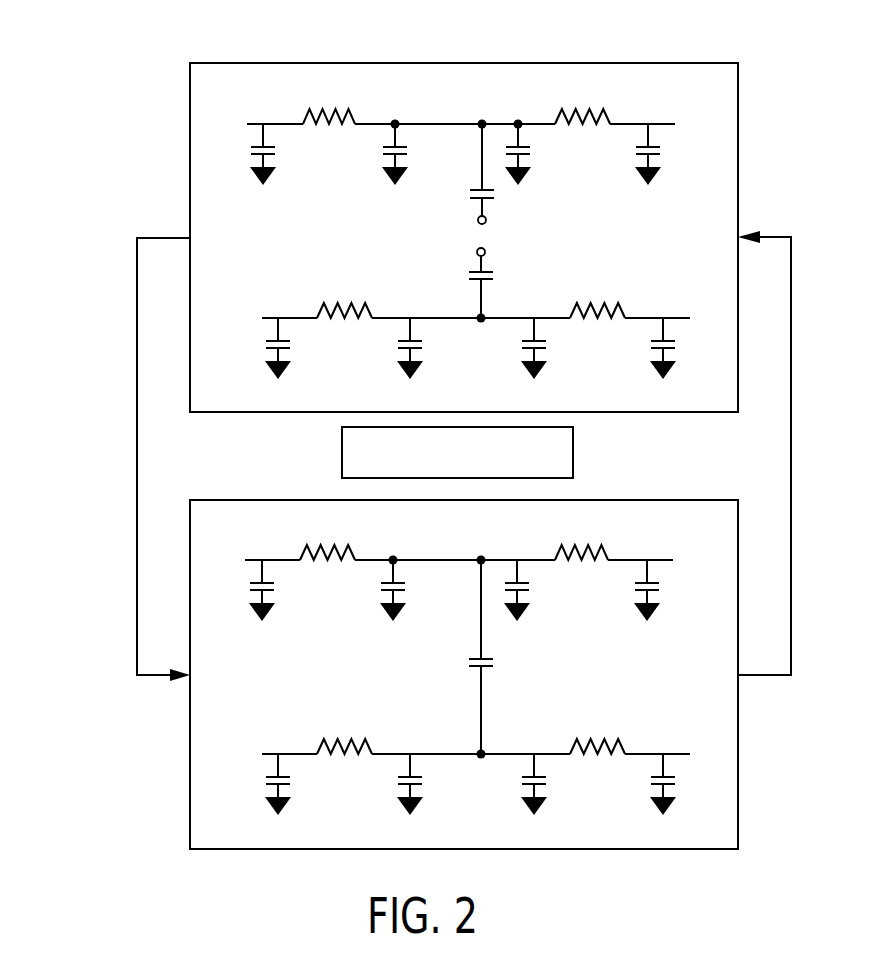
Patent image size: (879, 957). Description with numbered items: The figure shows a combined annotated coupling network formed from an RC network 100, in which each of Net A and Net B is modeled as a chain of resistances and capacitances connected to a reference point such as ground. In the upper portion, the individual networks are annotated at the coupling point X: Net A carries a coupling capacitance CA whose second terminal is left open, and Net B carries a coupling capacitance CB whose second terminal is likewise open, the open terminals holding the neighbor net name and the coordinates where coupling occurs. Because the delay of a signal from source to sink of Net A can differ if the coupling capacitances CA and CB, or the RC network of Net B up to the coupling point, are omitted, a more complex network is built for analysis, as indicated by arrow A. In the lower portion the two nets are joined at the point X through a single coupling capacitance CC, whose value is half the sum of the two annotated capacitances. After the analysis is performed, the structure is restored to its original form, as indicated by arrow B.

The RC network 100 is at (80, 104).
The arrow A is at (153, 459).
The arrow B is at (775, 453).
The coupling point X is at (482, 326).
The coupling capacitance CA is at (501, 174).
The coupling capacitance CB is at (500, 283).
The coupling capacitance Cc CC is at (500, 657).